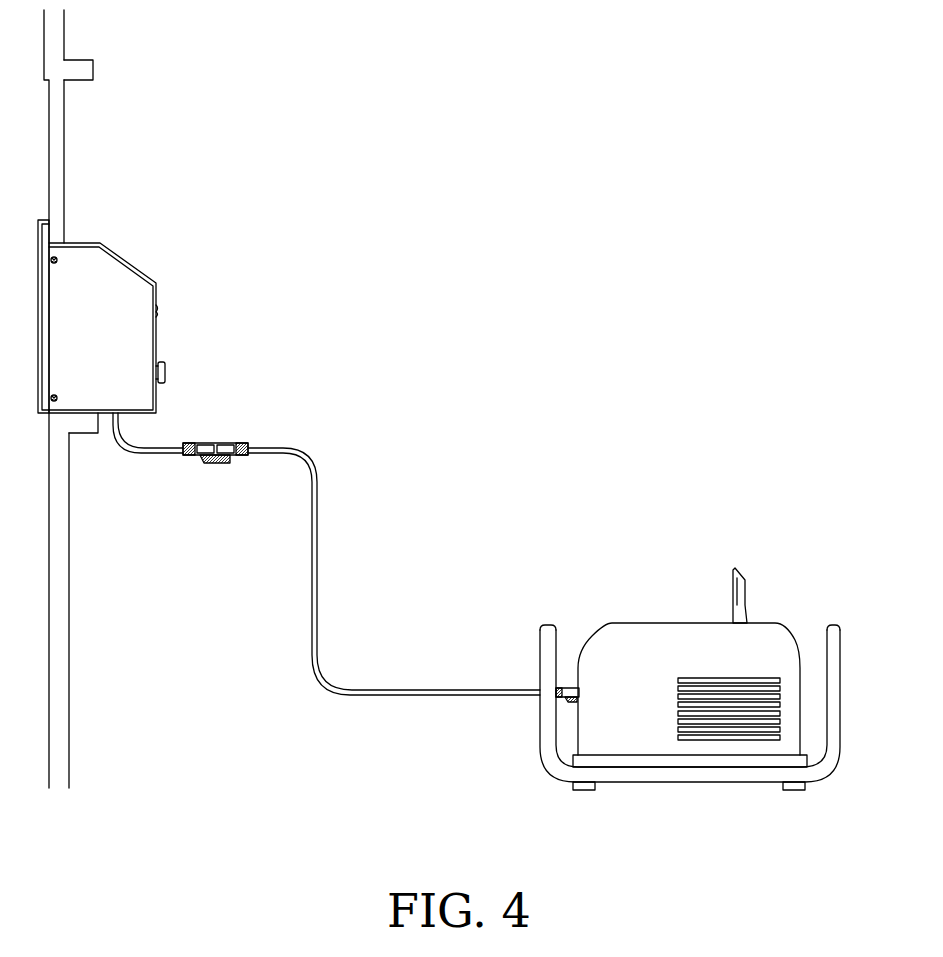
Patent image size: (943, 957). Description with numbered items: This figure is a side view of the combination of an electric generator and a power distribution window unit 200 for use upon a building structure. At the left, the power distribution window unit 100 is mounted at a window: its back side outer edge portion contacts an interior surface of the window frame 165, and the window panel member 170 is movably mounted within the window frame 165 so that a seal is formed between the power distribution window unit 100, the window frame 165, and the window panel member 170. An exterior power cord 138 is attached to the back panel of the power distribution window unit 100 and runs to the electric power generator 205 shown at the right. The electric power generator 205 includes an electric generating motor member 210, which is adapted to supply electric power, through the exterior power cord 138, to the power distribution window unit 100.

The power distribution window unit 100 is at (124, 262).
The exterior power cord 138 is at (318, 553).
The window frame 165 is at (93, 66).
The window panel member 170 is at (64, 170).
The combination of an electric generator and a power distribution window unit 200 is at (615, 180).
The electric power generator 205 is at (653, 622).
The electric generating motor member 210 is at (710, 625).